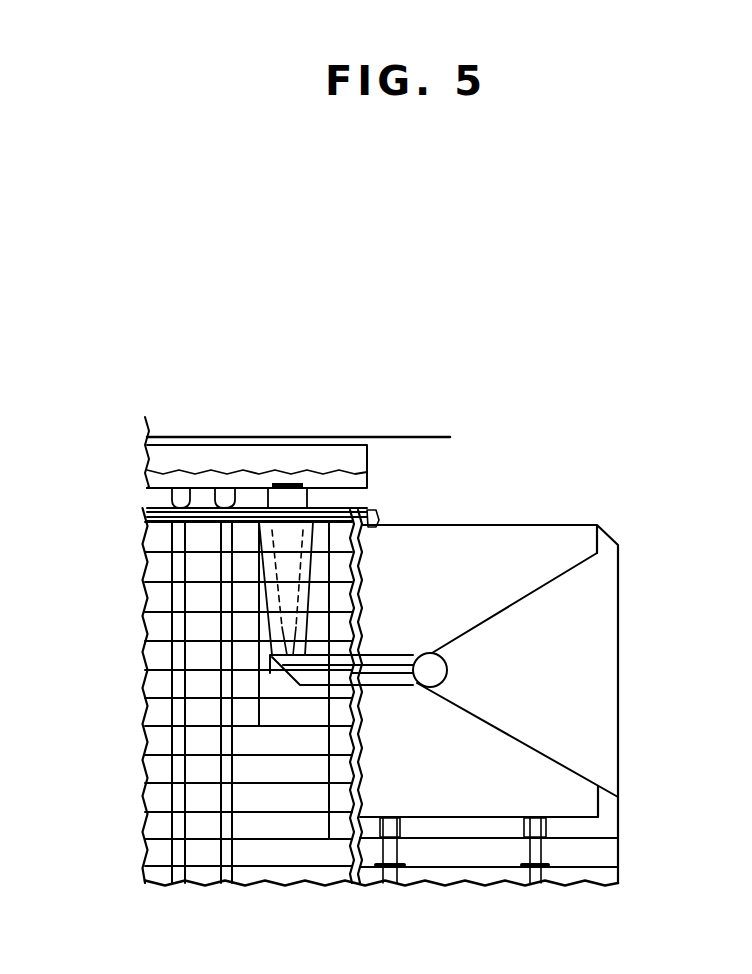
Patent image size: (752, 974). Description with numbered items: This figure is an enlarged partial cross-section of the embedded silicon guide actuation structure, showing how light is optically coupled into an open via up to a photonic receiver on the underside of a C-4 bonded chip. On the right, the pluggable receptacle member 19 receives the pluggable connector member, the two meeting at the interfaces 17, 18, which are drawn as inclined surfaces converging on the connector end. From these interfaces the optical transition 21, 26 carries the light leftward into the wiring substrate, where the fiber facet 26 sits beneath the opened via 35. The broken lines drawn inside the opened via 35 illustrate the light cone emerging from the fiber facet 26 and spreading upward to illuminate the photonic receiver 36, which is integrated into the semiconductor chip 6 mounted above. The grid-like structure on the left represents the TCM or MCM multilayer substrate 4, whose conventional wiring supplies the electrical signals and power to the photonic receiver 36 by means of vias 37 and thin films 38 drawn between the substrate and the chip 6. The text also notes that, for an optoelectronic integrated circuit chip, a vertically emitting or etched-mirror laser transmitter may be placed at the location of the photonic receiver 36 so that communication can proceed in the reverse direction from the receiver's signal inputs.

The multilayer substrate 4 is at (384, 875).
The semiconductor chip 6 is at (367, 482).
The interface 17 is at (447, 667).
The interface 18 is at (568, 768).
The pluggable receptacle member 19 is at (515, 525).
The optical transition 21 is at (367, 685).
The fiber facet 26 is at (298, 678).
The opened via 35 is at (313, 572).
The photonic receiver 36 is at (278, 487).
The via 37 is at (232, 510).
The thin film 38 is at (379, 520).